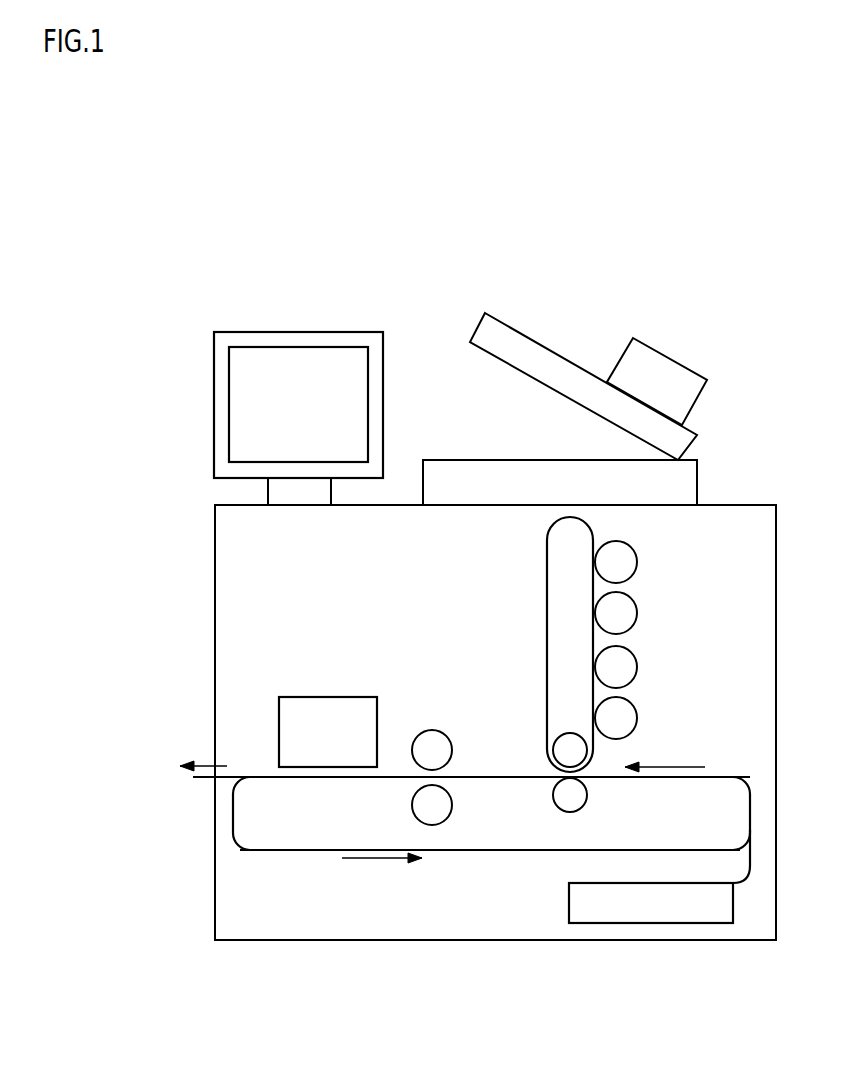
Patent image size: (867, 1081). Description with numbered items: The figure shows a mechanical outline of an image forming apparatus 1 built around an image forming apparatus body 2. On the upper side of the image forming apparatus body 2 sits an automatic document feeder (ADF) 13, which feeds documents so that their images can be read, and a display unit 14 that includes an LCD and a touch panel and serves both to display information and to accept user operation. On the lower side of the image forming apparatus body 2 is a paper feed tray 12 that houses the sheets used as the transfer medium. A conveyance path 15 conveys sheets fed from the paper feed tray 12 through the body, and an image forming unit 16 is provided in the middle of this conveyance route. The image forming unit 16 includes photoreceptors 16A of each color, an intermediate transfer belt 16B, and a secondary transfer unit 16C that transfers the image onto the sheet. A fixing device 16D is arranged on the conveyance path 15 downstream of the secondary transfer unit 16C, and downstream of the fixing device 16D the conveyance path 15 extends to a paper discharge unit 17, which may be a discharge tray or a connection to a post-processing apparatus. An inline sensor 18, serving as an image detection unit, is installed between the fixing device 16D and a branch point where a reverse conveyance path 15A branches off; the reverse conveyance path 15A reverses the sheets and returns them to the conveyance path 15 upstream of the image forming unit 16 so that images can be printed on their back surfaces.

The image forming apparatus 1 is at (210, 967).
The image forming apparatus body 2 is at (776, 720).
The paper feed tray 12 is at (733, 900).
The automatic document feeder (ADF) 13 is at (645, 322).
The display unit 14 is at (300, 332).
The conveyance path 15 is at (750, 818).
The reverse conveyance path 15A is at (493, 852).
The image forming unit 16 is at (663, 633).
The photoreceptors 16A is at (645, 590).
The intermediate transfer belt 16B is at (547, 584).
The secondary transfer unit 16C is at (586, 795).
The fixing device 16D is at (433, 728).
The paper discharge unit 17 is at (202, 781).
The inline sensor 18 is at (331, 697).